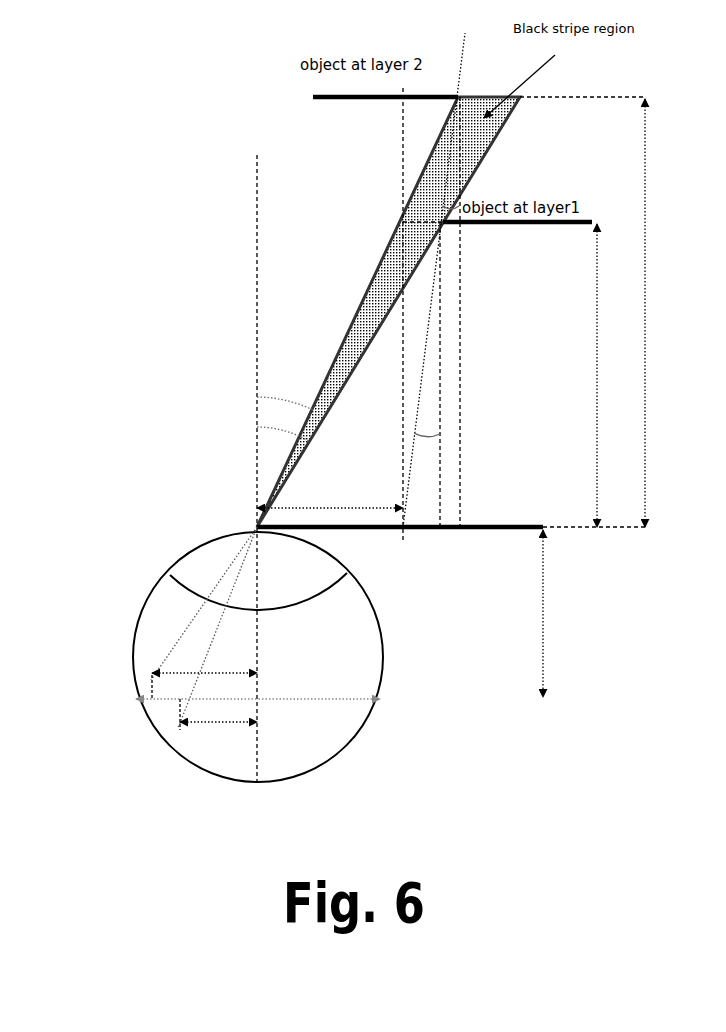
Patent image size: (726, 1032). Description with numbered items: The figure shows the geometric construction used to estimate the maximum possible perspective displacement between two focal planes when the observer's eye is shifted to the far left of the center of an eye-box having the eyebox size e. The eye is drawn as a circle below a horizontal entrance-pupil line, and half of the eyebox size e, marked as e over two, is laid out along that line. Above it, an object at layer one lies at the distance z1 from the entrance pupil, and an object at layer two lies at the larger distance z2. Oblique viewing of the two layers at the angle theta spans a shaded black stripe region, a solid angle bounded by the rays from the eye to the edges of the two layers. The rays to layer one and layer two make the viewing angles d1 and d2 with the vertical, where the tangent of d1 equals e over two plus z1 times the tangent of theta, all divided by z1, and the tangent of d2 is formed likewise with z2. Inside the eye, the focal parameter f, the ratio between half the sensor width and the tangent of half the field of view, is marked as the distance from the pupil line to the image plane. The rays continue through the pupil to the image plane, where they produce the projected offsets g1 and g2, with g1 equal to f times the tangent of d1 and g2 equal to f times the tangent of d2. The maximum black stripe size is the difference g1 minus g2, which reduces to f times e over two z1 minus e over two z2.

The eyebox size e is at (349, 470).
The viewing angle to layer 2 d2 is at (258, 399).
The viewing angle to layer 1 d1 is at (265, 453).
The oblique viewing angle θ theta is at (439, 299).
The distance between layer 1 and entrance pupil z1 is at (614, 375).
The distance between layer 2 and entrance pupil z2 is at (677, 313).
The ratio between half sensor width and tangent of half fov f is at (558, 613).
The projected displacement for layer 1 g1 is at (204, 659).
The projected displacement for layer 2 g2 is at (218, 740).